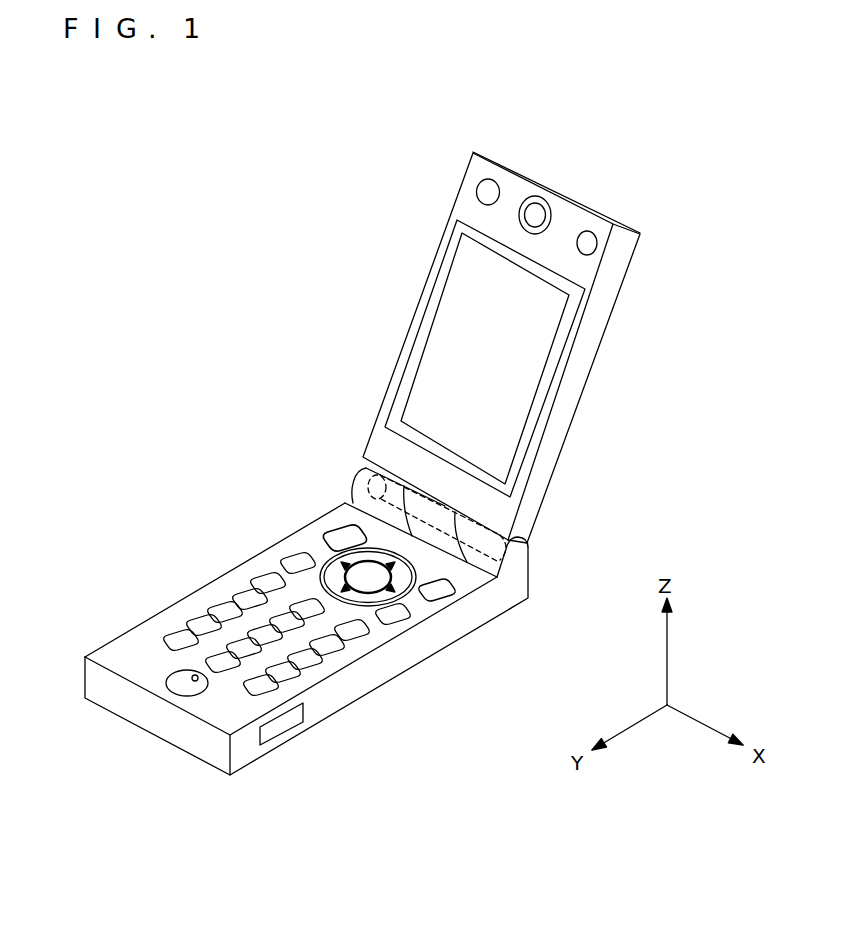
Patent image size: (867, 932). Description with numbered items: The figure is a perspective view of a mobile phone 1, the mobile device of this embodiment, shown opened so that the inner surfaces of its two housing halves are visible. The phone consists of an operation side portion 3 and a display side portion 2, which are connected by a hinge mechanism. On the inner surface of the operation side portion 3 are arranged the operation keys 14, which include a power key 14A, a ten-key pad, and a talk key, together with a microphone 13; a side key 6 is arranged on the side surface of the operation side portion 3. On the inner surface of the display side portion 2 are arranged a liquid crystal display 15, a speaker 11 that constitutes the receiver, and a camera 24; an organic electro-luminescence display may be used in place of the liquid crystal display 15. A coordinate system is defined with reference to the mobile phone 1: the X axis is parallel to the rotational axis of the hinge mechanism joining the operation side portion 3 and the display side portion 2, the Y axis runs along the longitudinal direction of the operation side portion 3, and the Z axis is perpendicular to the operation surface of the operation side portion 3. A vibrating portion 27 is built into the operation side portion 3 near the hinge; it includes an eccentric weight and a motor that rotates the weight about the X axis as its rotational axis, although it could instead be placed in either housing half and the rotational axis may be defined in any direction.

The mobile phone 1 is at (170, 226).
The display side portion 2 is at (578, 377).
The operation side portion 3 is at (468, 620).
The side key 6 is at (283, 724).
The speaker 11 is at (537, 208).
The microphone 13 is at (192, 678).
The operation keys 14 is at (314, 507).
The power key 14A is at (362, 634).
The liquid crystal display (LCD) 15 is at (440, 350).
The camera 24 is at (487, 192).
The vibrating portion 27 is at (525, 556).